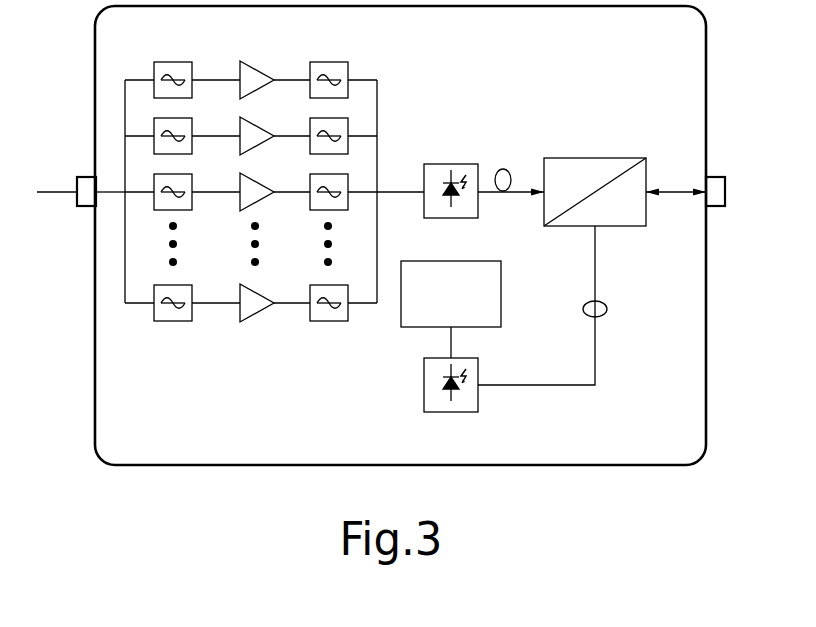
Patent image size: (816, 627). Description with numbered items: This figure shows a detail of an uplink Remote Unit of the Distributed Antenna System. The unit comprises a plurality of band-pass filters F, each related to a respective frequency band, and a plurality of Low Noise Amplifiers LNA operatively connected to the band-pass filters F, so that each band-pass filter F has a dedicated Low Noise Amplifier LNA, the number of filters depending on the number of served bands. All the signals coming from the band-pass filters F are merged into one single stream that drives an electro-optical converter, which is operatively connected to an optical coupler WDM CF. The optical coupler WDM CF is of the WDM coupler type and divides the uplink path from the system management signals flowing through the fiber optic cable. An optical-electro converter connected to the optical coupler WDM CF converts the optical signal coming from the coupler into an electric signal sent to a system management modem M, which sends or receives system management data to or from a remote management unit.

The band-pass filter F is at (251, 171).
The Low Noise Amplifier LNA is at (253, 172).
The optical coupler WDM CF is at (595, 170).
The system management modem M is at (451, 294).